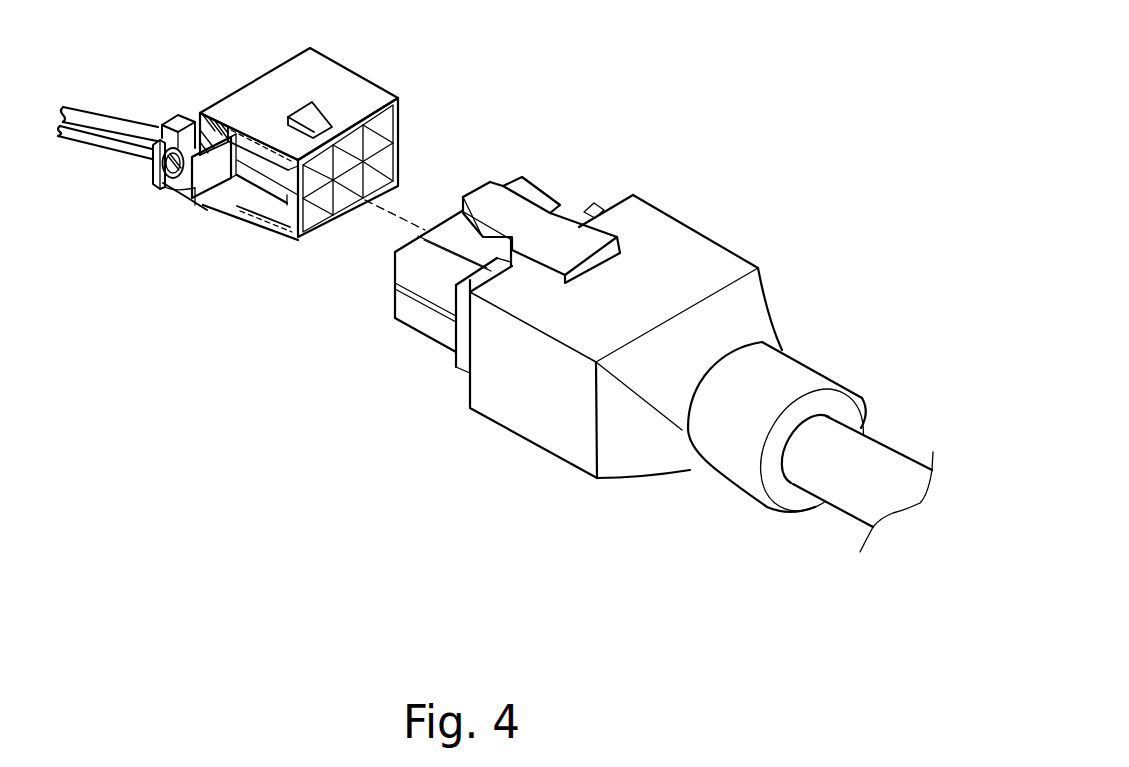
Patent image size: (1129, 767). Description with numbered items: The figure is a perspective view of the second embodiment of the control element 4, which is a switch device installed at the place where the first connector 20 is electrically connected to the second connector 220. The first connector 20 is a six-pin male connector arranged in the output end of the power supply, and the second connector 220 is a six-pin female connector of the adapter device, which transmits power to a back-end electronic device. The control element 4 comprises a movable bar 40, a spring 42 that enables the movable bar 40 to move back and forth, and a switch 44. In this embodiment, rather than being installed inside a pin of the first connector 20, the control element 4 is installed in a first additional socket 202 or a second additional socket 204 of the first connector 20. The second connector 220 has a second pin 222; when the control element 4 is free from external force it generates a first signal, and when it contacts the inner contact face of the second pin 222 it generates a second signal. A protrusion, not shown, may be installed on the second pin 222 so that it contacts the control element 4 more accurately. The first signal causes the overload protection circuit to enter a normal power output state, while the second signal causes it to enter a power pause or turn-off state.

The control element 4 is at (147, 230).
The first connector 20 is at (331, 182).
The movable bar 40 is at (222, 185).
The spring 42 is at (180, 195).
The switch 44 is at (151, 183).
The first additional socket 202 is at (283, 215).
The second additional socket 204 is at (245, 160).
The second connector 220 is at (638, 332).
The second pin 222 is at (412, 333).